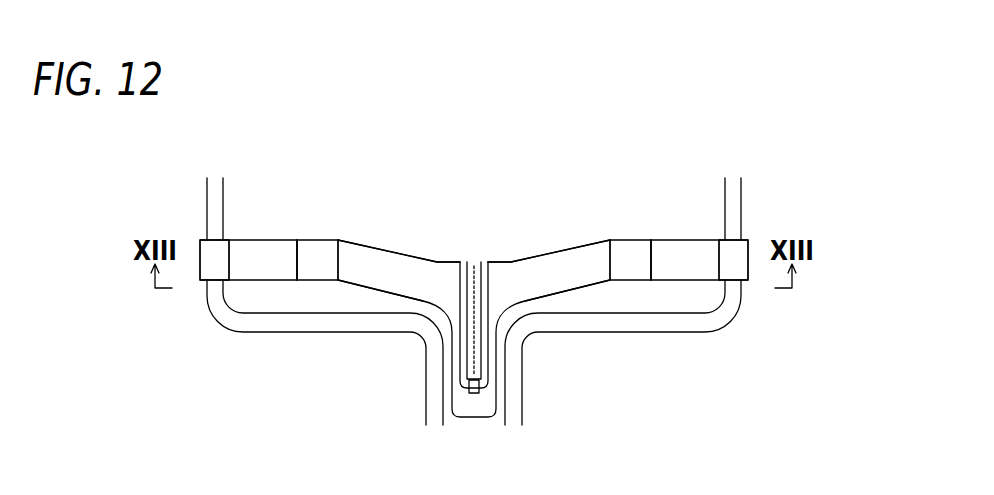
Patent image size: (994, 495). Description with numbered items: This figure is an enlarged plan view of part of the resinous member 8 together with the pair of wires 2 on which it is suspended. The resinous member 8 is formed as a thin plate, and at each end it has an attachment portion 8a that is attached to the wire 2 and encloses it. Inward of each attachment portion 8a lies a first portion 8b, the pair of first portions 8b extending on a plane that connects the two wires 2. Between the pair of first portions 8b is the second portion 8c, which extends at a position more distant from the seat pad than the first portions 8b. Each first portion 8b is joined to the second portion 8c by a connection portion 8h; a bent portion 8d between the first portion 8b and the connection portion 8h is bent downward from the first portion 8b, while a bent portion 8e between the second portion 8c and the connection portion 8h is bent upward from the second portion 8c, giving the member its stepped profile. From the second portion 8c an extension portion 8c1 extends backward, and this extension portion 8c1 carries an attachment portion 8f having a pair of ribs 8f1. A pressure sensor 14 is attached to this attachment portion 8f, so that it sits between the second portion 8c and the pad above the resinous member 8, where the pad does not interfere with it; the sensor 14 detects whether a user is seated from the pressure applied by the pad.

The resinous member 8 is at (389, 165).
The wire 2 is at (228, 200).
The attachment portion 8a is at (212, 255).
The first portion 8b is at (280, 250).
The connection portion 8h is at (318, 253).
The second portion 8c is at (417, 267).
The extension portion 8c1 is at (450, 307).
The attachment portion 8f is at (473, 355).
The rib 8f1 is at (483, 263).
The bent portion 8d is at (297, 265).
The bent portion 8e is at (338, 268).
The sensor 14 is at (476, 395).